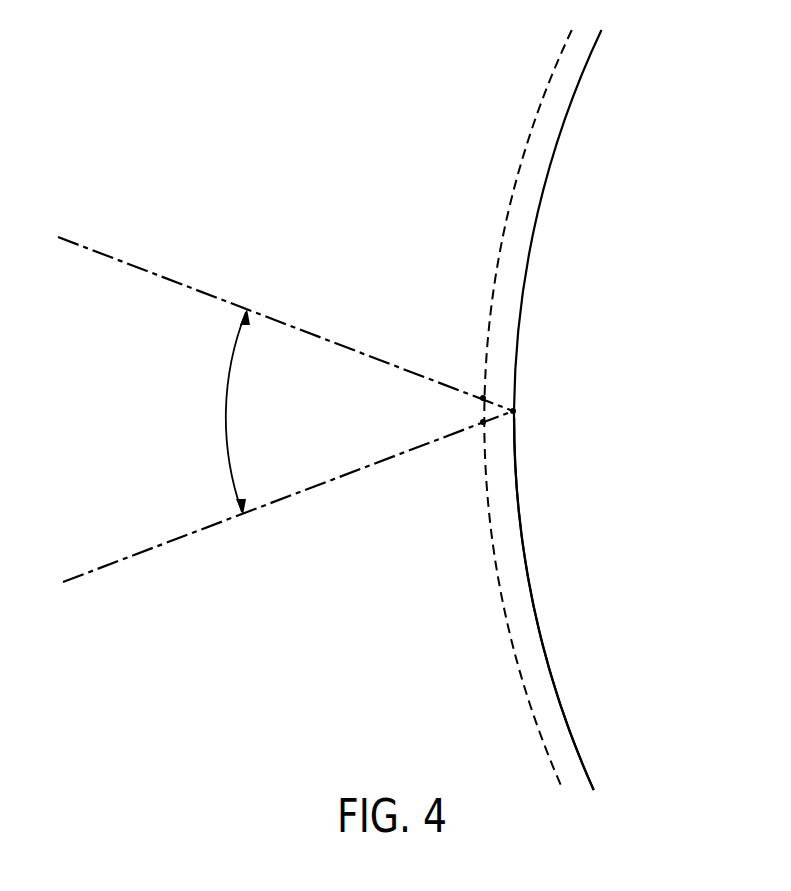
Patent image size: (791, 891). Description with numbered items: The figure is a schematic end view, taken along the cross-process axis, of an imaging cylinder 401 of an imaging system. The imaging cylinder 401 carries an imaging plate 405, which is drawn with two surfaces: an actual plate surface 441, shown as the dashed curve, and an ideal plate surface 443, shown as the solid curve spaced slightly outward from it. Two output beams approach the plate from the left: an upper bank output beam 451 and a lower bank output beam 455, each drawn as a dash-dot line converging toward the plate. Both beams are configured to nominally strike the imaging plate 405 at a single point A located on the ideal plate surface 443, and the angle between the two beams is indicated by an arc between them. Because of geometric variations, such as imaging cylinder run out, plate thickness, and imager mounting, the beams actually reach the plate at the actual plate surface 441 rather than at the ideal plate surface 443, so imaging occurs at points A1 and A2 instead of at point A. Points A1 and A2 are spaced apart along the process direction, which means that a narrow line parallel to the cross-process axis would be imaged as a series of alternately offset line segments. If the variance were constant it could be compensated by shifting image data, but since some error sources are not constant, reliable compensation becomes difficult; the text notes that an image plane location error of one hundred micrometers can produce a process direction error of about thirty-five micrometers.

The imaging plate 405 is at (602, 76).
The actual plate surface 441 is at (519, 175).
The ideal plate surface 443 is at (524, 531).
The imaging cylinder 401 is at (645, 300).
The upper bank output beam 451 is at (213, 296).
The lower bank output beam 455 is at (193, 533).
The point A is at (514, 411).
The point A1 is at (482, 422).
The point A2 is at (482, 397).